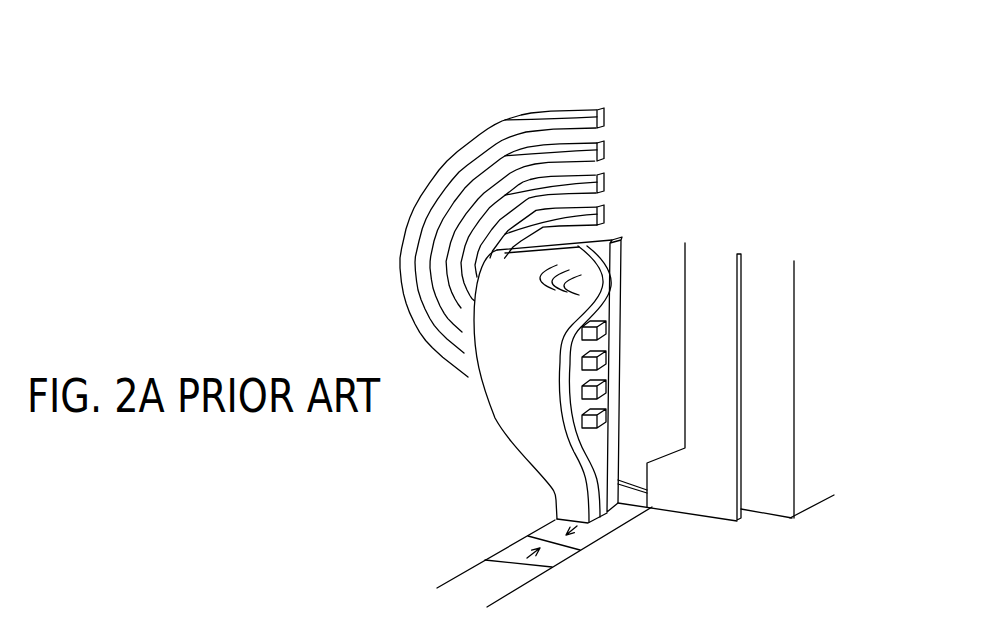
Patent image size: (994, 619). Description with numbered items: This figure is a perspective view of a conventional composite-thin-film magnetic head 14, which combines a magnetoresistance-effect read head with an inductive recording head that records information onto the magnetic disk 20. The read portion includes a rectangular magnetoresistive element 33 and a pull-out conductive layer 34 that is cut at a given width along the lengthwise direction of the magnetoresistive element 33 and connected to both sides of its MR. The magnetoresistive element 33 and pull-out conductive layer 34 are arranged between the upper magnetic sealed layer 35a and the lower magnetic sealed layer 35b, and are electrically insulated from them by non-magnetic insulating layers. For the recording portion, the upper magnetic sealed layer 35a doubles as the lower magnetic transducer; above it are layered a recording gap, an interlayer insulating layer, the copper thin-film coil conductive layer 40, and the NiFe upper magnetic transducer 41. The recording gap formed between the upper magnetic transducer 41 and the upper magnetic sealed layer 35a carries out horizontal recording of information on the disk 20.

The composite-thin-film magnetic head 14 is at (567, 49).
The thin-film coil conductive layer 40 is at (427, 177).
The upper magnetic transducer 41 is at (511, 428).
The magnetic disk 20 is at (511, 580).
The magnetoresistive element 33 is at (641, 497).
The upper magnetic sealed layer 35a is at (622, 502).
The pull-out conductive layer 34 is at (718, 509).
The lower magnetic sealed layer 35b is at (810, 498).